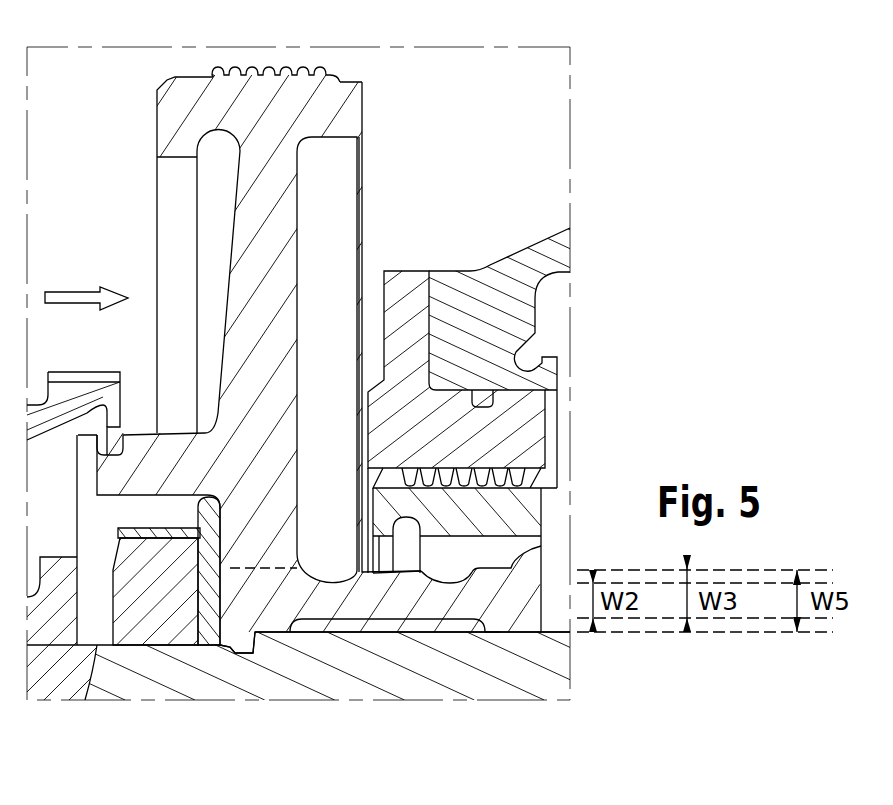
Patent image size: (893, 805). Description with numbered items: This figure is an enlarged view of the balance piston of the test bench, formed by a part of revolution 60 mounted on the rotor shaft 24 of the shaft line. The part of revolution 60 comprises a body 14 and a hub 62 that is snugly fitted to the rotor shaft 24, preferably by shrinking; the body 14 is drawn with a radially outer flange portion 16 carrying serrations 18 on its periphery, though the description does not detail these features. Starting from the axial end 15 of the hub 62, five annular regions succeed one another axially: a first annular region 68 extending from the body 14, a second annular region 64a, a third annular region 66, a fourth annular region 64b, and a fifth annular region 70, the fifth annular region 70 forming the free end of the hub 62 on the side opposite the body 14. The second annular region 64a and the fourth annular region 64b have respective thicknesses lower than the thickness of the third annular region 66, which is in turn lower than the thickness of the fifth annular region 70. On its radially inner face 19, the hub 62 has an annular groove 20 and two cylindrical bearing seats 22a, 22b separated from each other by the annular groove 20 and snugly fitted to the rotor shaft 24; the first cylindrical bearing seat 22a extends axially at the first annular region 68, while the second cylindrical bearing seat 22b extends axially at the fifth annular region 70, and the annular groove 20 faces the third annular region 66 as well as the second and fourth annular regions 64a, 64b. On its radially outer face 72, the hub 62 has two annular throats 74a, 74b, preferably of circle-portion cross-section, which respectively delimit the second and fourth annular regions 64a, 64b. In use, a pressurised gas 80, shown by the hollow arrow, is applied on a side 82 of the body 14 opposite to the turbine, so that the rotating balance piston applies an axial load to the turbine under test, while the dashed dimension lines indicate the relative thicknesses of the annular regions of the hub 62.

The body 14 is at (252, 326).
The axial end 15 is at (220, 595).
The flange block 16 is at (220, 100).
The serrations 18 is at (283, 68).
The radially inner face 19 is at (260, 723).
The annular groove 20 is at (367, 625).
The first cylindrical bearing seat 22a is at (280, 634).
The second cylindrical bearing seat 22b is at (523, 640).
The rotor shaft 24 is at (562, 652).
The part of revolution 60 is at (207, 249).
The hub 62 is at (547, 648).
The second annular region 64a is at (317, 598).
The fourth annular region 64b is at (437, 598).
The third annular region 66 is at (393, 598).
The first annular region 68 is at (242, 617).
The fifth annular region 70 is at (533, 625).
The radially outer face 72 is at (541, 546).
The annular throat 74a is at (347, 580).
The annular throat 74b is at (451, 578).
The pressurised gas 80 is at (83, 290).
The side 82 is at (233, 225).